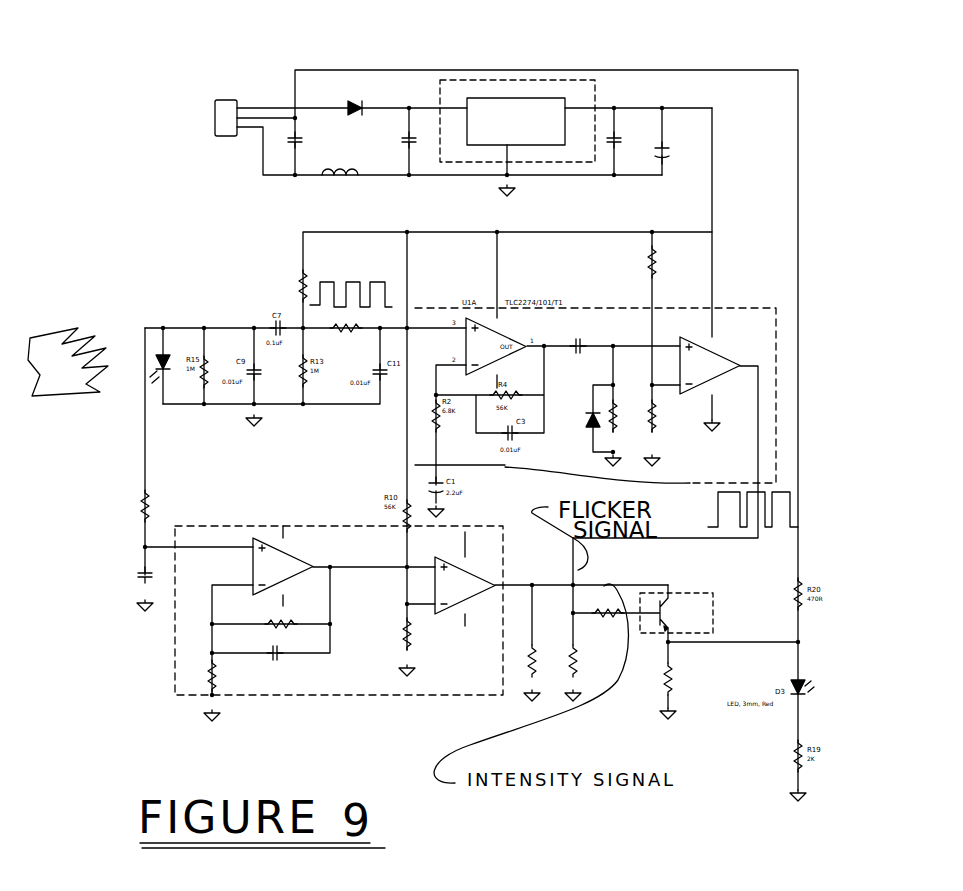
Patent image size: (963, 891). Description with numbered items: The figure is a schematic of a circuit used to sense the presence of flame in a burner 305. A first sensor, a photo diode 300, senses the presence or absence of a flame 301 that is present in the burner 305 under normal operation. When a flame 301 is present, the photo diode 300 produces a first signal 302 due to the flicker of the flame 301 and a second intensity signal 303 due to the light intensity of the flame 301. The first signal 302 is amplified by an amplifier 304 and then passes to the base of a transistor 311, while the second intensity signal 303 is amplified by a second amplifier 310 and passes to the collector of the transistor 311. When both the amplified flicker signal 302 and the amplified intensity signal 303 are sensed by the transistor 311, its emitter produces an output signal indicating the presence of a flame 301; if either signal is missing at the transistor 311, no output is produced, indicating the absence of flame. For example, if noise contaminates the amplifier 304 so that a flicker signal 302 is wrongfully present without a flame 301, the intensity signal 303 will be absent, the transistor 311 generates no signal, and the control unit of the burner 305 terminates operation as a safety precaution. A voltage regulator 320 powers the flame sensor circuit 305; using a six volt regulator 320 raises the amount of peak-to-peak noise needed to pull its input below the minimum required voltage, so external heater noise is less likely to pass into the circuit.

The photo diode 300 is at (170, 362).
The flame 301 is at (84, 303).
The first signal 302 is at (505, 318).
The second intensity signal 303 is at (145, 465).
The amplifier 304 is at (757, 312).
The burner 305 is at (292, 505).
The amplifier 310 is at (345, 697).
The transistor 311 is at (707, 593).
The voltage regulator 320 is at (562, 80).